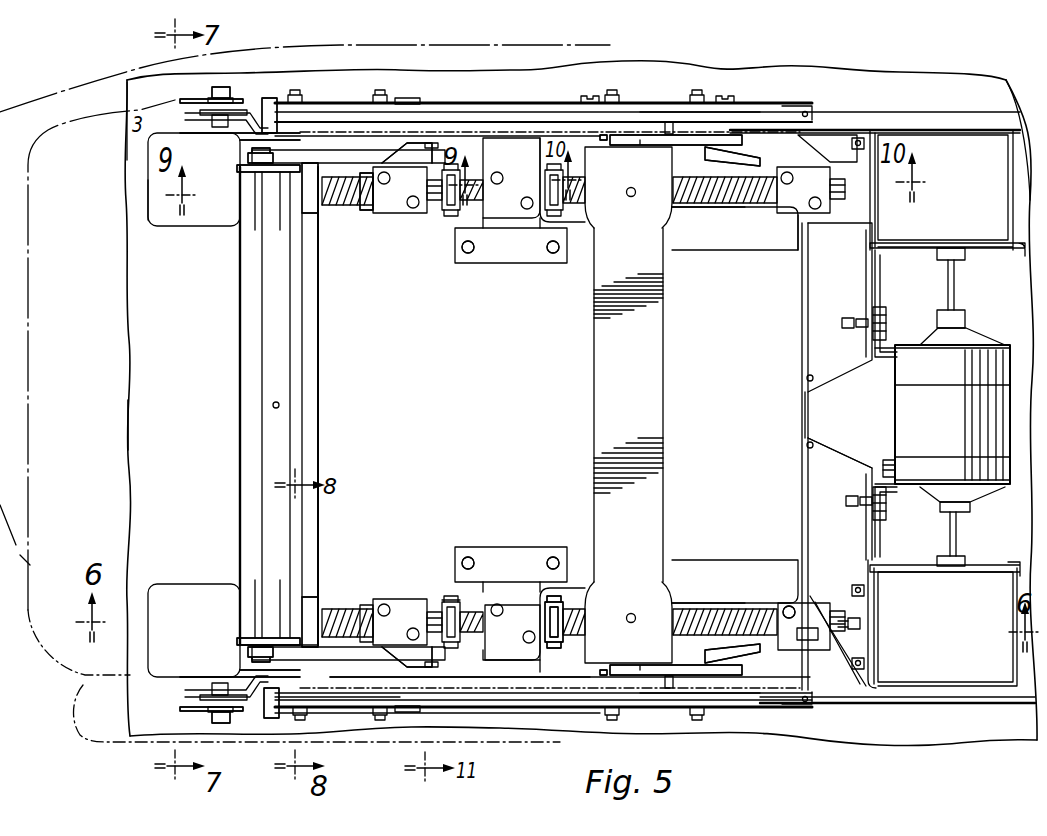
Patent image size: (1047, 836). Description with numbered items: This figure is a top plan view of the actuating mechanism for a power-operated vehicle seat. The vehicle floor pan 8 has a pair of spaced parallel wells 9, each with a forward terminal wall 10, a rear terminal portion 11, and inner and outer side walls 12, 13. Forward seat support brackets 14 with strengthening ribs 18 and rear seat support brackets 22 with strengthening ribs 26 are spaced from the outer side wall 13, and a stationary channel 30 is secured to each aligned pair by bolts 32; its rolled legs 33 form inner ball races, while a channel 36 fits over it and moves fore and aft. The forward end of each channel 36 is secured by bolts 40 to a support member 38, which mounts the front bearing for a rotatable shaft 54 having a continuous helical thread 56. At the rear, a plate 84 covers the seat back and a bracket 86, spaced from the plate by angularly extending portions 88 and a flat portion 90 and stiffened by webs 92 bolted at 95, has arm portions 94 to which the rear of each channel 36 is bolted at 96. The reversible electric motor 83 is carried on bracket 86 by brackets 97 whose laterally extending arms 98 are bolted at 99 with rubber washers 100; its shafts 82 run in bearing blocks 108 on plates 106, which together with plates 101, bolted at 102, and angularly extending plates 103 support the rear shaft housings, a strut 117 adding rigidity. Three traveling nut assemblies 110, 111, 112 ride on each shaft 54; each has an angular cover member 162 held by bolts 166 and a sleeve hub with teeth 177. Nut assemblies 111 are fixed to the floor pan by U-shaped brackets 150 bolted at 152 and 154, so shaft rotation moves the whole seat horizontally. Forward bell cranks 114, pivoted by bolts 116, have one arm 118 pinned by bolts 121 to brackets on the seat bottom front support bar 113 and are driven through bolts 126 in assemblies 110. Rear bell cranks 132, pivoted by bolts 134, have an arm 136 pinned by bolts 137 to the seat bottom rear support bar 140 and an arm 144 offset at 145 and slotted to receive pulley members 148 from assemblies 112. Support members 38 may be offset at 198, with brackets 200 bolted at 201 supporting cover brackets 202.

The vehicle floor pan 8 is at (128, 423).
The wells 9 is at (226, 226).
The forward terminal wall 10 is at (148, 220).
The rear terminal portion 11 is at (792, 235).
The inner side wall 12 is at (200, 226).
The outer side wall 13 is at (155, 685).
The forward seat support brackets 14 is at (358, 120).
The strengthening ribs 18 is at (266, 100).
The rear seat support brackets 22 is at (652, 103).
The strengthening ribs 26 is at (590, 96).
The channel 30 is at (330, 112).
The bolts 32 is at (295, 90).
The legs 33 is at (300, 713).
The channel 36 is at (545, 703).
The support member 38 is at (505, 138).
The bolts 40 is at (451, 165).
The rotatable shafts 54 is at (735, 228).
The helical groove or thread 56 is at (700, 222).
The motor shafts 82 is at (955, 292).
The reversible electric motor 83 is at (1006, 360).
The plate 84 is at (806, 530).
The bracket 86 is at (855, 280).
The angularly extending portions 88 is at (838, 452).
The flat portion 90 is at (810, 410).
The webs 92 is at (835, 135).
The arm portions 94 is at (822, 127).
The bolted connection 95 is at (840, 640).
The bolts 96 is at (669, 122).
The brackets 97 is at (937, 332).
The laterally extending arms 98 is at (879, 307).
The bolted connection 99 is at (880, 320).
The rubber washers 100 is at (877, 357).
The plates 101 is at (875, 135).
The bolted connection 102 is at (858, 138).
The angularly extending plates 103 is at (942, 150).
The plates 106 is at (1003, 250).
The bearing blocks 108 is at (962, 260).
The traveling nut assembly 110 is at (368, 210).
The traveling nut assembly 111 is at (572, 608).
The traveling nut assembly 112 is at (755, 218).
The seat bottom front support bar 113 is at (240, 392).
The forward bell cranks 114 is at (365, 205).
The bolts 116 is at (400, 190).
The strut 117 is at (1010, 88).
The arm 118 is at (290, 212).
The bolts 121 is at (252, 156).
The bolts 126 is at (310, 214).
The rear bell cranks 132 is at (667, 145).
The bolts 134 is at (758, 158).
The arm 136 is at (640, 135).
The bolts 137 is at (603, 140).
The seat bottom rear support bar 140 is at (594, 405).
The arm 144 is at (290, 172).
The offset 145 is at (794, 710).
The pulley members 148 is at (400, 145).
The U-shaped brackets 150 is at (534, 263).
The bolts 152 is at (513, 210).
The bolted connection 154 is at (466, 262).
The angular cover member 162 is at (400, 600).
The bolts 166 is at (436, 213).
The teeth 177 is at (446, 600).
The offset 198 is at (245, 140).
The brackets 200 is at (193, 118).
The bolted connection 201 is at (222, 87).
The brackets 202 is at (185, 102).